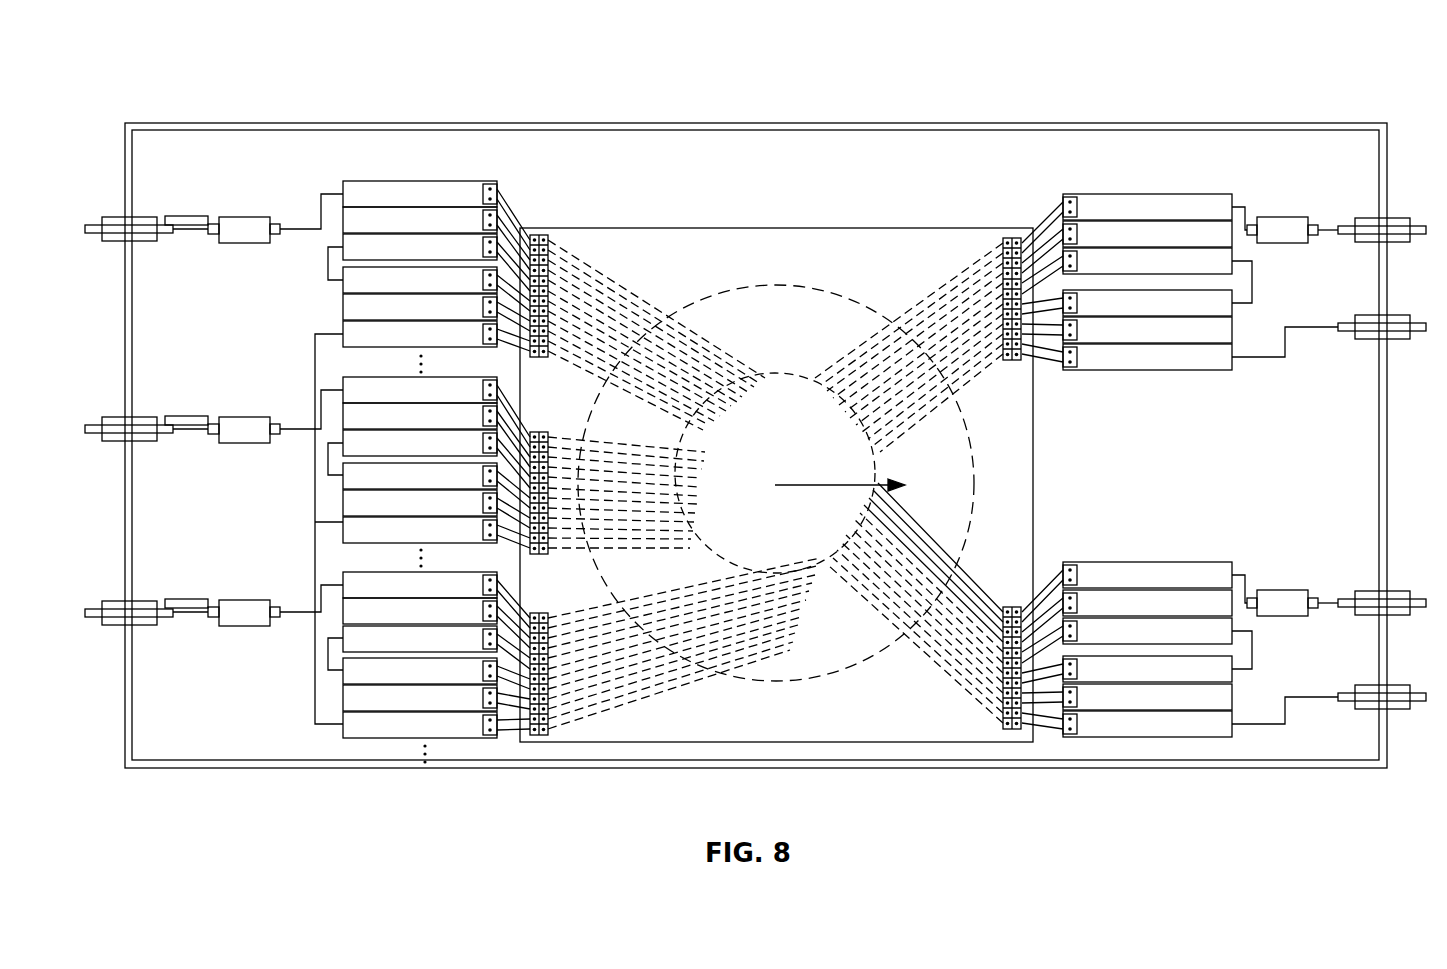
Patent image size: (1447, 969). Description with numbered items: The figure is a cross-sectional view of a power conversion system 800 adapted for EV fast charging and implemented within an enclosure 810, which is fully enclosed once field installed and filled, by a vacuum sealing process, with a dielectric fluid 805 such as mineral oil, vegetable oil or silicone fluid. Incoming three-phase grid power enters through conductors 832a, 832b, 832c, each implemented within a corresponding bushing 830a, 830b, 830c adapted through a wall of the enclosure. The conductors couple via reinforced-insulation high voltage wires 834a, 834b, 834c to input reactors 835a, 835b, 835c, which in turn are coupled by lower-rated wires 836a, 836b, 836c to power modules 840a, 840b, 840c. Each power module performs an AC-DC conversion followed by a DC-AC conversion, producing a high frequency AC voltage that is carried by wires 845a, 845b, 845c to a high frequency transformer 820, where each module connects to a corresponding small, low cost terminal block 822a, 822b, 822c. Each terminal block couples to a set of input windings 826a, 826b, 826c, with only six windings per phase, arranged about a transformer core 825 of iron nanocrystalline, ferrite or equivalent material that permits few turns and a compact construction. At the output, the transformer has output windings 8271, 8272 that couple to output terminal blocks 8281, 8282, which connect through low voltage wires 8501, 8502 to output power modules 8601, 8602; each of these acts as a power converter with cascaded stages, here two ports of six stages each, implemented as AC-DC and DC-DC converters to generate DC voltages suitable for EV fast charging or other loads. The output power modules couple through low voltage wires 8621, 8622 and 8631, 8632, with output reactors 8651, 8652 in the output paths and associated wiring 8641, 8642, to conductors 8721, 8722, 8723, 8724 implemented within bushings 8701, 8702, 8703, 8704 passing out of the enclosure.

The power distribution system 800 is at (204, 40).
The housing 805 is at (755, 445).
The enclosure 810 is at (345, 770).
The transformer region 820 is at (732, 228).
The magnetic core axis arrow 825 is at (790, 488).
The phase A input bushing 830a is at (118, 217).
The phase B input bushing 830b is at (118, 417).
The phase C input bushing 830c is at (118, 601).
The phase A input conductor 832a is at (88, 240).
The phase B input conductor 832b is at (88, 440).
The phase C input conductor 832c is at (88, 624).
The phase A fuse 834a is at (190, 216).
The phase B fuse 834b is at (205, 416).
The phase C fuse 834c is at (205, 599).
The phase A filter 835a is at (248, 217).
The phase B filter 835b is at (250, 416).
The phase C filter 835c is at (250, 600).
The phase A wiring 836a is at (296, 226).
The phase B wiring 836b is at (316, 385).
The phase C wiring 836c is at (292, 614).
The phase A power module 840a is at (459, 213).
The phase B power module 840b is at (431, 463).
The phase C power module 840c is at (412, 686).
The phase A stage pin headers 845a is at (499, 203).
The phase B stage pin headers 845b is at (520, 552).
The phase C stage pin headers 845c is at (497, 740).
The phase A connector 822a is at (540, 234).
The phase B connector 822b is at (546, 432).
The phase C connector 822c is at (547, 738).
The phase A primary windings 826a is at (655, 297).
The phase B primary windings 826b is at (615, 556).
The phase C primary windings 826c is at (610, 700).
The port 1 connector 8281 is at (1003, 238).
The port 2 connector 8282 is at (1005, 728).
The port 1 secondary windings 8271 is at (980, 385).
The port 2 secondary windings 8272 is at (988, 588).
The port 1 stage 8501 is at (1063, 214).
The port 2 stage 8502 is at (1050, 732).
The port 1 power module 8601 is at (1114, 232).
The port 2 power module 8602 is at (1141, 663).
The port 1 stage interconnect 8621 is at (1240, 215).
The port 2 stage interconnect 8622 is at (1240, 585).
The port 1 output wiring 8631 is at (1240, 368).
The port 2 output wiring 8632 is at (1240, 722).
The port 1 filter output wiring 8641 is at (1325, 233).
The port 2 filter output wiring 8642 is at (1322, 607).
The port 1 output filter 8651 is at (1278, 186).
The port 2 output filter 8652 is at (1278, 560).
The output bushing 1 8701 is at (1395, 218).
The output bushing 2 8702 is at (1372, 318).
The output bushing 3 8703 is at (1395, 590).
The output bushing 4 8704 is at (1368, 710).
The output conductor 1 8721 is at (1396, 240).
The output conductor 2 8722 is at (1400, 333).
The output conductor 3 8723 is at (1398, 612).
The output conductor 4 8724 is at (1402, 708).